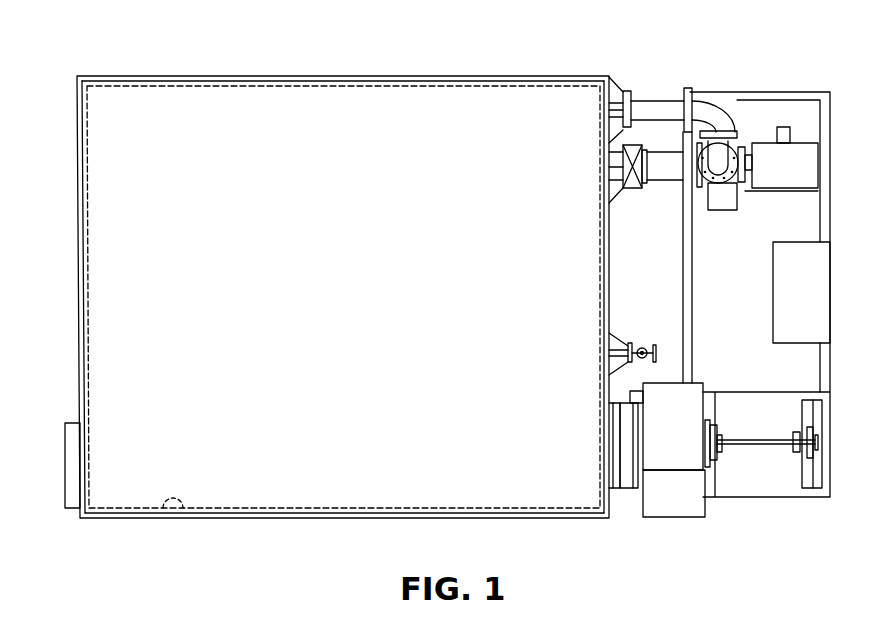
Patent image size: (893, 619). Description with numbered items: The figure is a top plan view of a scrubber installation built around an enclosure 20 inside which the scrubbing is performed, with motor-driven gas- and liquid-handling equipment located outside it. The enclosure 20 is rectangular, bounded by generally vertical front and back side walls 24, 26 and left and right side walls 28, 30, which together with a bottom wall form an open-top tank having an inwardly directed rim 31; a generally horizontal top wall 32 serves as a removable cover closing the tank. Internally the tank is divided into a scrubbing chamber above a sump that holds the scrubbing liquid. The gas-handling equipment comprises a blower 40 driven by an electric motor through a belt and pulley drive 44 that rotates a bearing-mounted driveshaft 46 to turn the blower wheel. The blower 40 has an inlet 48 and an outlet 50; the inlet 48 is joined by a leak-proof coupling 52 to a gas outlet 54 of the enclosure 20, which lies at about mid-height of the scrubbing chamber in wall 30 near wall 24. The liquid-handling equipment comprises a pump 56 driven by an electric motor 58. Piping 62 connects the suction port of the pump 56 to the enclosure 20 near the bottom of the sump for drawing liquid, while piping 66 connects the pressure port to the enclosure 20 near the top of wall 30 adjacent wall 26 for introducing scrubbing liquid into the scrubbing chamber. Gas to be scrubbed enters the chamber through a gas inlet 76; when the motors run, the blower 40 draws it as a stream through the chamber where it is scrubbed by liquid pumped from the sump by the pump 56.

The enclosure 20 is at (190, 76).
The front side wall 24 is at (265, 518).
The back side wall 26 is at (339, 76).
The left side wall 28 is at (78, 272).
The right side wall 30 is at (610, 290).
The rim 31 is at (163, 512).
The top wall 32 is at (545, 105).
The blower 40 is at (694, 474).
The belt and pulley drive 44 is at (815, 460).
The driveshaft 46 is at (758, 445).
The inlet 48 is at (633, 490).
The outlet 50 is at (673, 453).
The leak-proof coupling 52 is at (627, 393).
The gas outlet 54 is at (640, 486).
The pump 56 is at (720, 211).
The electric motor 58 is at (790, 155).
The piping 62 is at (660, 172).
The piping 66 is at (648, 105).
The gas inlet 76 is at (71, 508).